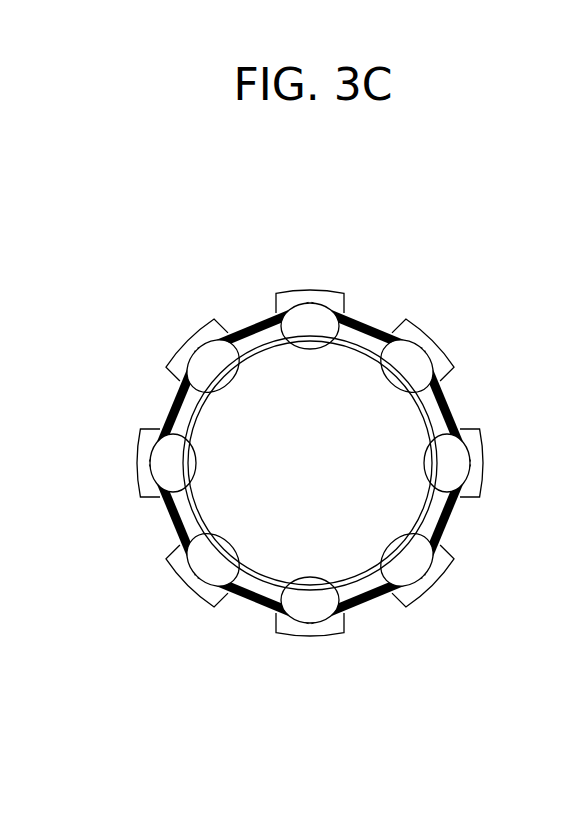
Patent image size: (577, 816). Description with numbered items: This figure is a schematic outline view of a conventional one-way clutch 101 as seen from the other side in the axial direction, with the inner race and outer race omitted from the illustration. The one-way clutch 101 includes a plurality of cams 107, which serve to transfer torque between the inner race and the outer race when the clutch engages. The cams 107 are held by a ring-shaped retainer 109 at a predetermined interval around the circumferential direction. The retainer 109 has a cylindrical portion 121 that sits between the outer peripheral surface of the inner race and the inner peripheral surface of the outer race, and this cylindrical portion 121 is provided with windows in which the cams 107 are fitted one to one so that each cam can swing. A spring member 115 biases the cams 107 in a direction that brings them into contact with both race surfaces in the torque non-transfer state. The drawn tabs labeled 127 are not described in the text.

The one-way clutch 101 is at (433, 217).
The cam 107 is at (212, 353).
The retainer 109 is at (432, 331).
The spring member 115 is at (173, 533).
The cylindrical portion 121 is at (170, 410).
The outer tabs 127 is at (397, 332).